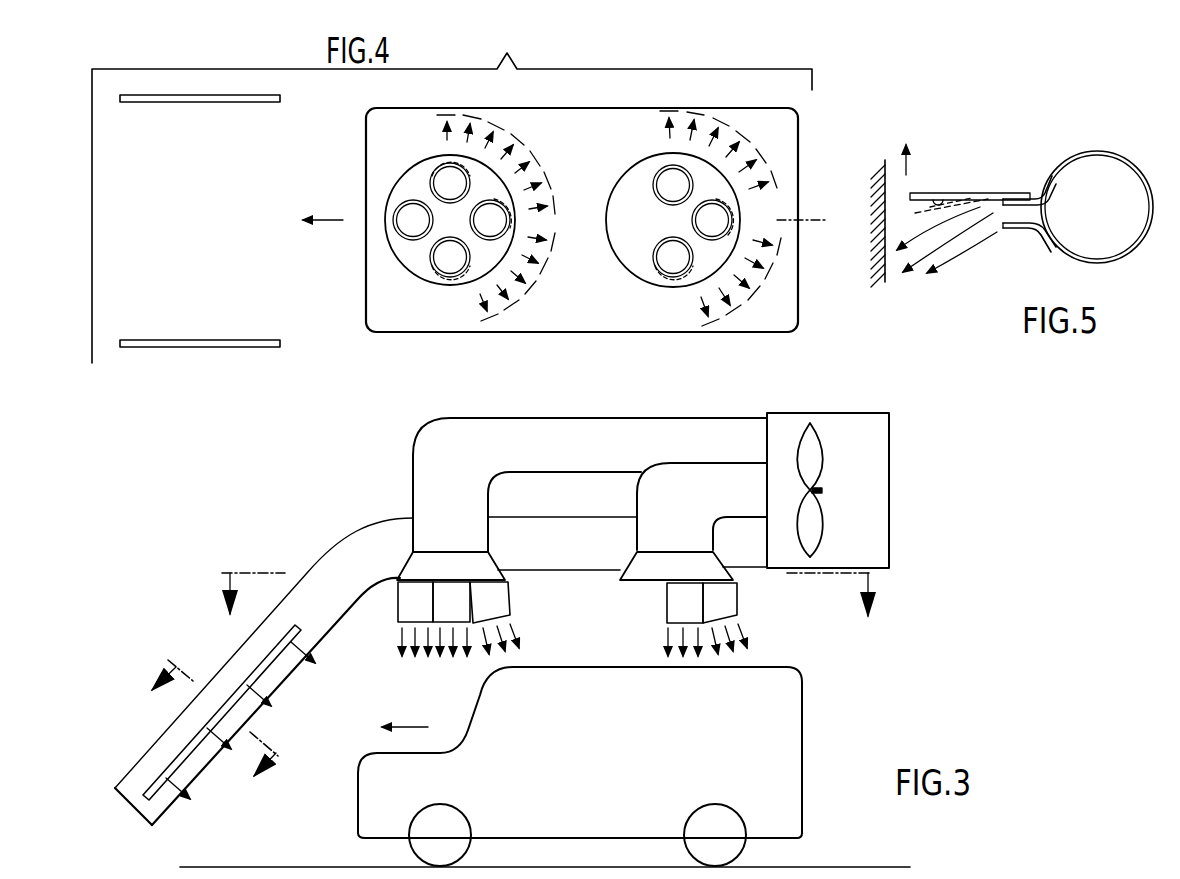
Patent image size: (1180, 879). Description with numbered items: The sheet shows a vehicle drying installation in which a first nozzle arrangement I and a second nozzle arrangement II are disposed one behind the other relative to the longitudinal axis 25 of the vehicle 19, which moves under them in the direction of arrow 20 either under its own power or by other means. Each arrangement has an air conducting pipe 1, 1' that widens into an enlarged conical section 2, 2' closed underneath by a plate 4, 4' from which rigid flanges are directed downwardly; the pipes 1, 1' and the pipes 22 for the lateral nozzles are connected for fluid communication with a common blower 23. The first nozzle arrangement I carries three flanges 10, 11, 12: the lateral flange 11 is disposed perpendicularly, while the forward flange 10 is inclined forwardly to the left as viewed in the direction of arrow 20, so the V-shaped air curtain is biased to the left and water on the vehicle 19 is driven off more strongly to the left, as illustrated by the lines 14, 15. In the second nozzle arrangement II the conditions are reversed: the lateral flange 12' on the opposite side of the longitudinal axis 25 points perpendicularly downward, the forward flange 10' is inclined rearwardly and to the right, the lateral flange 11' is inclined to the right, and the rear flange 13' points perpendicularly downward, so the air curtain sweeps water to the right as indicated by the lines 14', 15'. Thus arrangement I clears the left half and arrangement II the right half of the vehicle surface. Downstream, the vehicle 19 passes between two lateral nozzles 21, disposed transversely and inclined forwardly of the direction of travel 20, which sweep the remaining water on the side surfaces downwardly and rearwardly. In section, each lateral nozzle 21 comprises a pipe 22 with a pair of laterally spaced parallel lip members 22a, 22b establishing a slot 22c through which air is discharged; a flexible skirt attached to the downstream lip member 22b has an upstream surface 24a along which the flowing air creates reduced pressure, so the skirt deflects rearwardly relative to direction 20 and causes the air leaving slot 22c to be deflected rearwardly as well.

In FIG. 3, the air conducting pipe 1 is at (702, 485).
In FIG. 3, the air conducting pipe 1' is at (590, 475).
In FIG. 3, the enlarged conical section 2 is at (676, 552).
In FIG. 3, the enlarged conical section 2' is at (467, 552).
In FIG. 4, the plate 4 is at (661, 224).
In FIG. 4, the plate 4' is at (450, 238).
In FIG. 4, the forward flange 10 is at (681, 219).
In FIG. 3, the forward flange 10 is at (748, 618).
In FIG. 4, the forward flange 10' is at (517, 201).
In FIG. 3, the forward flange 10' is at (518, 618).
In FIG. 4, the lateral flange 11 is at (661, 167).
In FIG. 4, the lateral flange 11' is at (447, 159).
In FIG. 4, the flange 12 is at (655, 255).
In FIG. 3, the flange 12 is at (664, 619).
In FIG. 4, the lateral flange 12' is at (447, 279).
In FIG. 3, the lateral flange 12' is at (463, 636).
In FIG. 4, the rear flange 13' is at (401, 242).
In FIG. 3, the rear flange 13' is at (395, 619).
In FIG. 4, the lines 14 is at (742, 282).
In FIG. 4, the lines 14' is at (517, 277).
In FIG. 4, the lines 15 is at (718, 150).
In FIG. 4, the lines 15' is at (499, 164).
In FIG. 4, the vehicle 19 is at (800, 116).
In FIG. 5, the vehicle 19 is at (886, 280).
In FIG. 3, the vehicle 19 is at (802, 745).
In FIG. 4, the arrow 20 is at (322, 222).
In FIG. 5, the arrow 20 is at (909, 166).
In FIG. 3, the arrow 20 is at (406, 713).
In FIG. 5, the lateral nozzles 21 is at (1172, 168).
In FIG. 3, the lateral nozzles 21 is at (162, 762).
In FIG. 5, the pipe 22 is at (1100, 151).
In FIG. 3, the pipe 22 is at (322, 622).
In FIG. 5, the lip member 22a is at (1043, 253).
In FIG. 5, the downstream lip member 22b is at (1022, 198).
In FIG. 5, the slot 22c is at (1000, 218).
In FIG. 3, the blower 23 is at (889, 490).
In FIG. 5, the upstream surface 24a is at (950, 193).
In FIG. 4, the longitudinal axis 25 is at (822, 224).
In FIG. 4, the first nozzle arrangement I is at (640, 280).
In FIG. 3, the first nozzle arrangement I is at (622, 580).
In FIG. 4, the second nozzle arrangement II is at (405, 175).
In FIG. 3, the second nozzle arrangement II is at (512, 580).